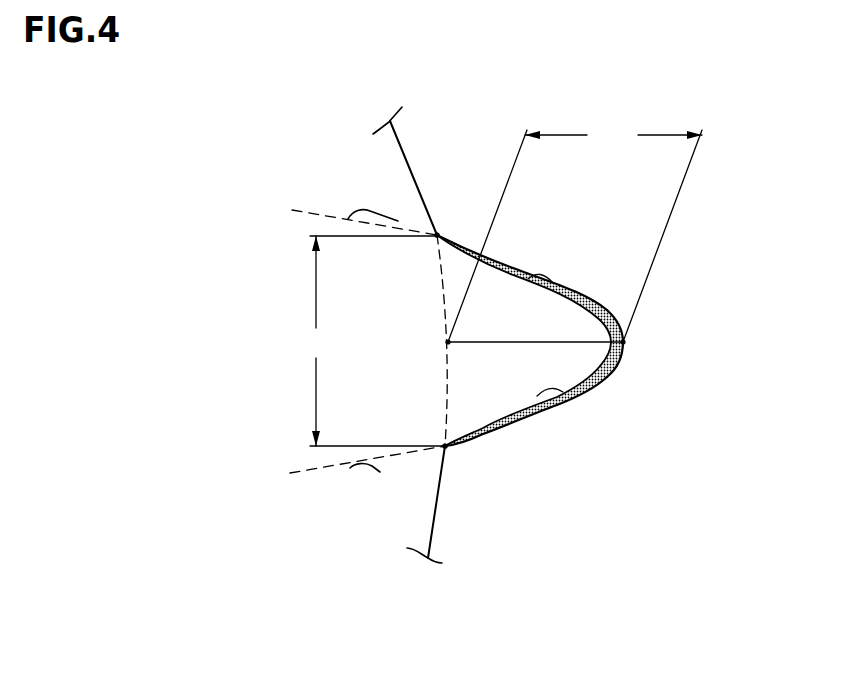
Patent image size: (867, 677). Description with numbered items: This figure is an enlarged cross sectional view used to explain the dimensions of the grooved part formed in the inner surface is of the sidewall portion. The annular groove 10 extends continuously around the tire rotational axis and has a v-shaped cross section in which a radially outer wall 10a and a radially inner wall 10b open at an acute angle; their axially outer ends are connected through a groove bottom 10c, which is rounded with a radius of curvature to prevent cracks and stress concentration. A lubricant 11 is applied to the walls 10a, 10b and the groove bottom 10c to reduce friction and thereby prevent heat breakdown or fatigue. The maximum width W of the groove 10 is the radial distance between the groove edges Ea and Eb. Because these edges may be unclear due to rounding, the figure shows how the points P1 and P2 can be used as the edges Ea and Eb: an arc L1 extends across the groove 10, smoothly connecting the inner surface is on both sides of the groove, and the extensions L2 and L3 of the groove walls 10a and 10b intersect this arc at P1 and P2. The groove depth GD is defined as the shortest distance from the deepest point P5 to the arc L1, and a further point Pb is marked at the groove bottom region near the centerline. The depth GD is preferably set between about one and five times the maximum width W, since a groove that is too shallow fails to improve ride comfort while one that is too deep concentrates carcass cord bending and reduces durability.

The annular groove 10 is at (588, 357).
The radially outer wall 10a is at (553, 280).
The radially inner wall 10b is at (523, 418).
The groove bottom 10c is at (607, 378).
The lubricant 11 is at (577, 397).
The inner surface is is at (410, 157).
The groove edge Ea is at (437, 236).
The groove edge Eb is at (443, 448).
The intersecting point P1 is at (436, 234).
The intersecting point P2 is at (444, 445).
The deepest point P5 is at (625, 340).
The bottom reference point Pb is at (612, 317).
The arc L1 is at (445, 292).
The extension of the groove wall L2 is at (347, 215).
The extension of the groove wall L3 is at (349, 467).
The maximum width W is at (374, 341).
The groove depth GD is at (575, 231).